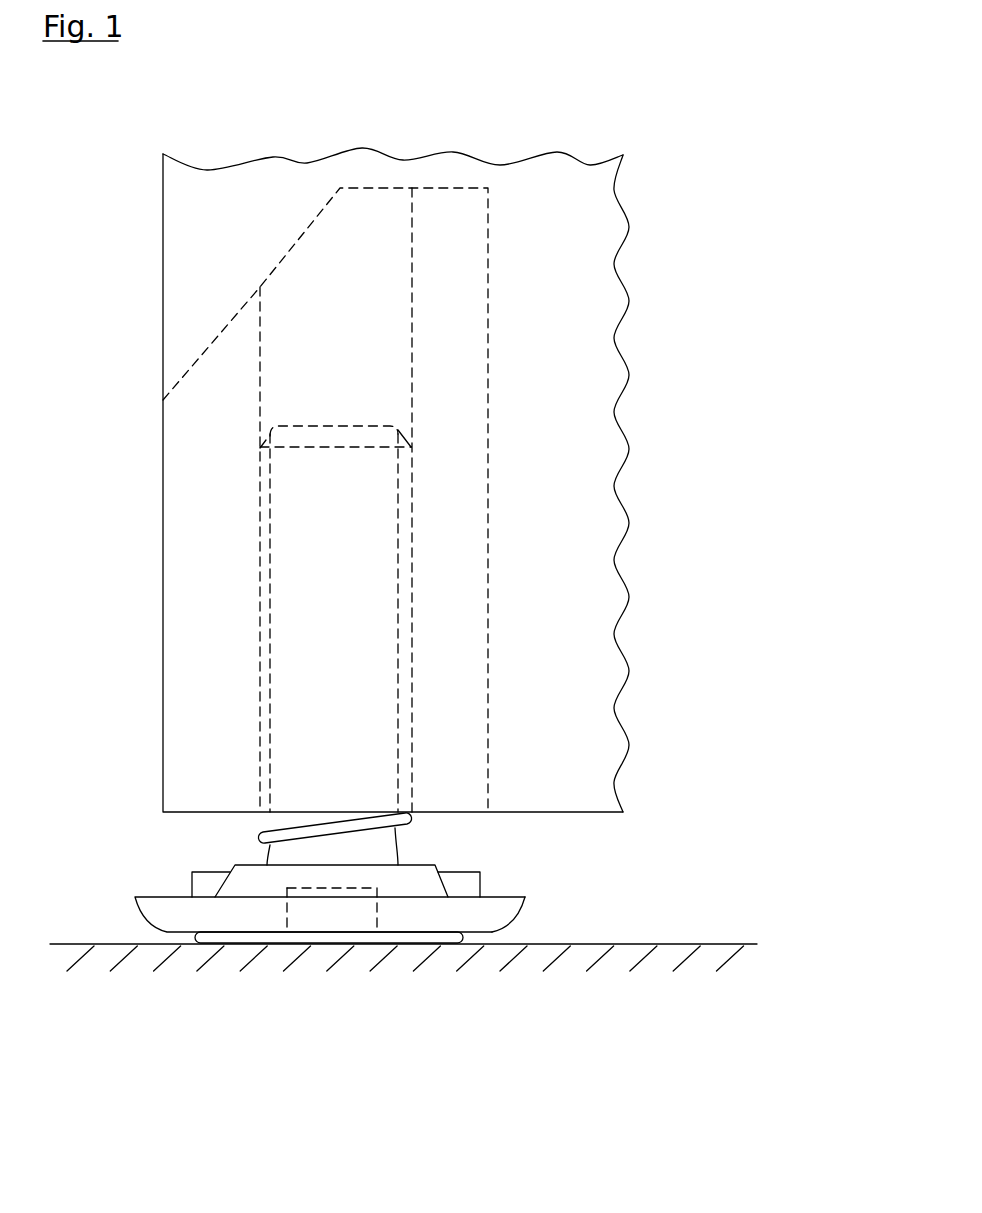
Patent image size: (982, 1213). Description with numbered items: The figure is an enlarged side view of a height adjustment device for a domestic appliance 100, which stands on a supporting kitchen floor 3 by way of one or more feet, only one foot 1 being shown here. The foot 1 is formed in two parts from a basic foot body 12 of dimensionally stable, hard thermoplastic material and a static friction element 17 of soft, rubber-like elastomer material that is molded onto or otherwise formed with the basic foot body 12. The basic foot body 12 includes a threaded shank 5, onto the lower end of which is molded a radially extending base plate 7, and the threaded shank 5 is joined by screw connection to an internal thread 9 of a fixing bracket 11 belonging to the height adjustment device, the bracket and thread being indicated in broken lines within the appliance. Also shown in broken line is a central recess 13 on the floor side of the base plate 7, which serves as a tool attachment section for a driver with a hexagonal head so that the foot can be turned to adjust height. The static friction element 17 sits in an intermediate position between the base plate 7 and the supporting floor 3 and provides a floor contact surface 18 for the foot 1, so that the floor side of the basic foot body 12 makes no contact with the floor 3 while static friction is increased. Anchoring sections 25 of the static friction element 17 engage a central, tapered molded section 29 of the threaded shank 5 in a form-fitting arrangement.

The domestic appliance 100 is at (600, 270).
The fixing bracket 11 is at (193, 366).
The internal thread 9 is at (262, 568).
The foot 1 is at (297, 717).
The threaded shank 5 is at (398, 830).
The tapered molded section 29 is at (415, 882).
The anchoring sections 25 is at (205, 872).
The basic foot body 12 is at (133, 912).
The base plate 7 is at (497, 915).
The floor contact surface 18 is at (363, 946).
The central recess 13 is at (288, 913).
The static friction element 17 is at (188, 944).
The kitchen floor 3 is at (678, 943).